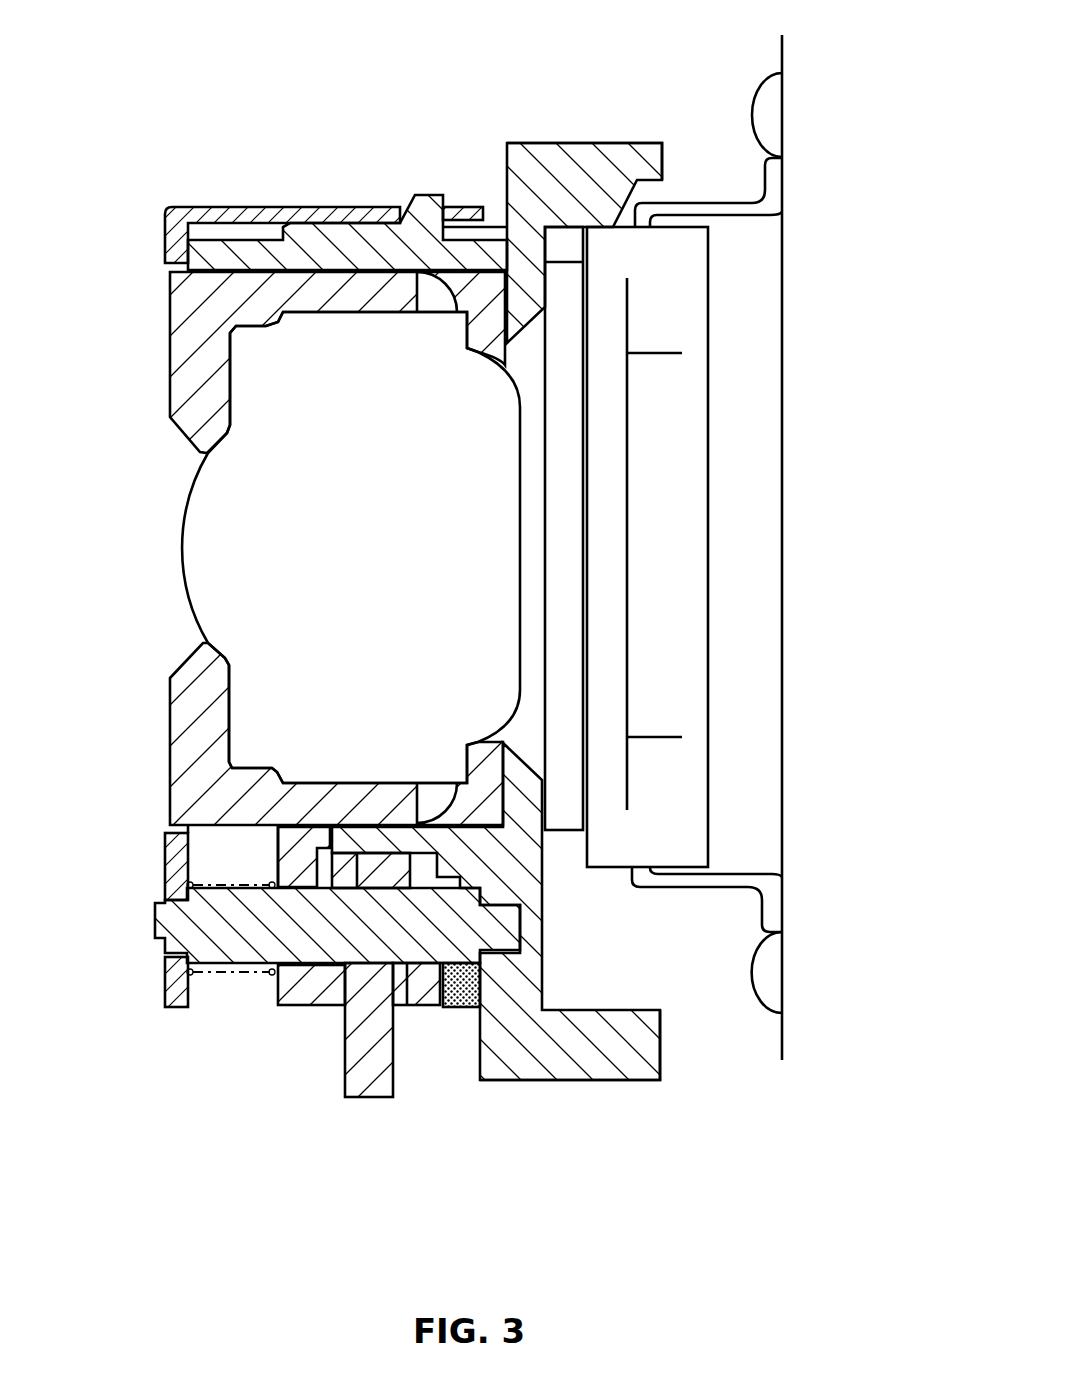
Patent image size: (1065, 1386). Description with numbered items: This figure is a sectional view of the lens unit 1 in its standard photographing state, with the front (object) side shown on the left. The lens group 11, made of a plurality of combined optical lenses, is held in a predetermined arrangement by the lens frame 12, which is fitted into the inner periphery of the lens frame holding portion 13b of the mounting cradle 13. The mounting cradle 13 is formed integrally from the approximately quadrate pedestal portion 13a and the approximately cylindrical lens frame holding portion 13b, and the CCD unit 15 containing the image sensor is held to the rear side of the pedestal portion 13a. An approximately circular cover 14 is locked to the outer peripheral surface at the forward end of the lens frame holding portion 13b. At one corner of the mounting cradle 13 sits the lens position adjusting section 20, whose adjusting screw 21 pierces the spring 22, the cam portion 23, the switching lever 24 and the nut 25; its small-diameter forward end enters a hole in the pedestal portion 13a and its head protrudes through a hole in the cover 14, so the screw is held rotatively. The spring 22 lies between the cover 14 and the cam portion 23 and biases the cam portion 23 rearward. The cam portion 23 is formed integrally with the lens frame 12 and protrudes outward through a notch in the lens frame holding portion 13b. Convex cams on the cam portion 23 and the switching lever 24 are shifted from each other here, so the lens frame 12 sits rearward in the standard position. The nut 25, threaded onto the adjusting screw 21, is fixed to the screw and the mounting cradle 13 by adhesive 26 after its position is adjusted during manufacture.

The lens unit 1 is at (248, 104).
The lens group 11 is at (323, 593).
The lens frame 12 is at (193, 342).
The mounting cradle 13 is at (580, 135).
The pedestal portion 13a is at (530, 147).
The lens frame holding portion 13b is at (312, 240).
The cover 14 is at (177, 230).
The CCD unit 15 is at (680, 555).
The lens position adjusting section 20 is at (175, 1173).
The adjusting screw 21 is at (207, 952).
The spring 22 is at (262, 972).
The cam portion 23 is at (310, 982).
The switching lever 24 is at (370, 1075).
The nut 25 is at (427, 990).
The adhesive 26 is at (452, 1010).